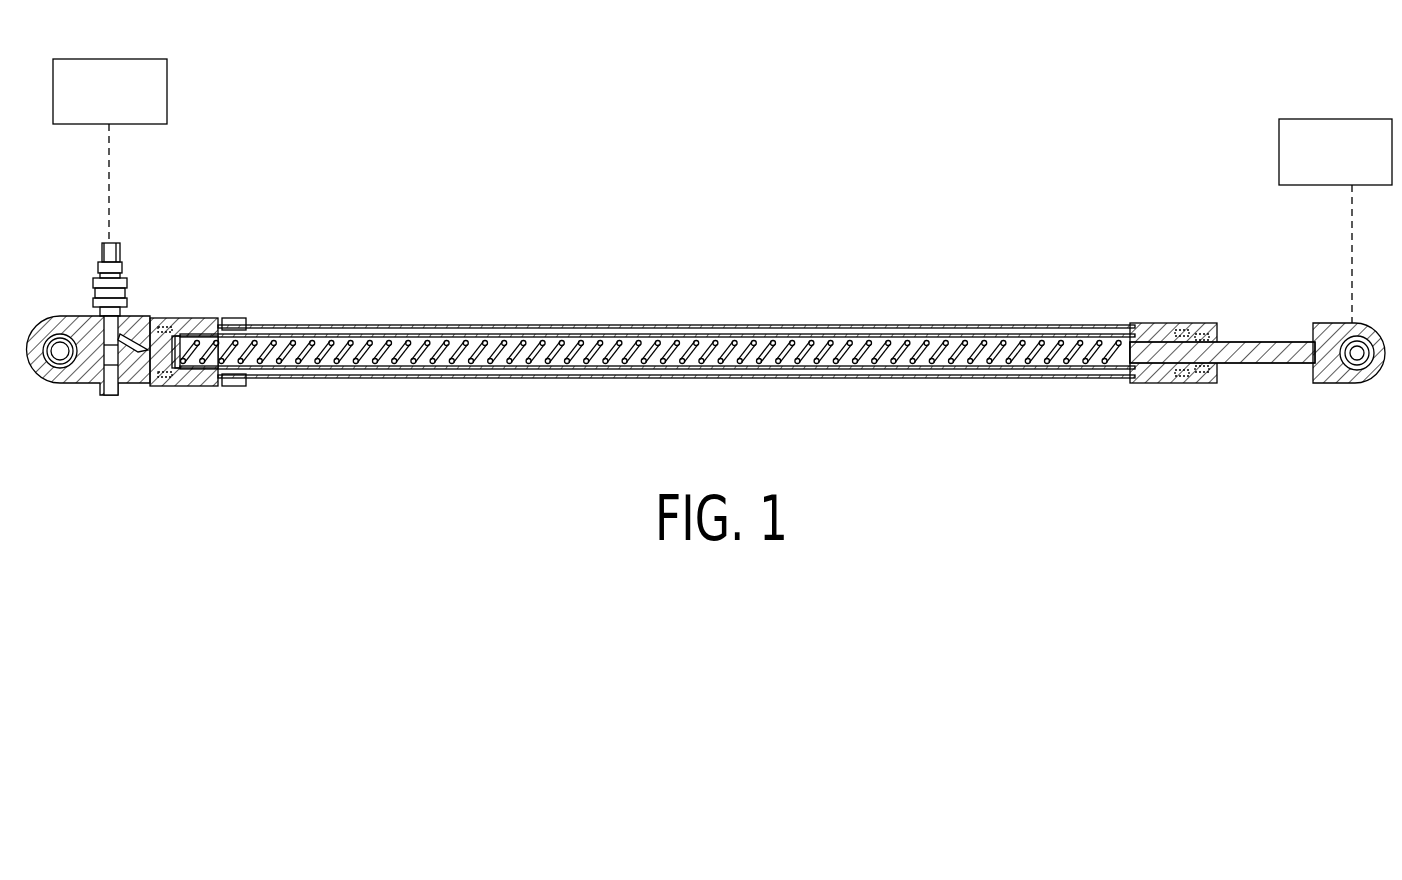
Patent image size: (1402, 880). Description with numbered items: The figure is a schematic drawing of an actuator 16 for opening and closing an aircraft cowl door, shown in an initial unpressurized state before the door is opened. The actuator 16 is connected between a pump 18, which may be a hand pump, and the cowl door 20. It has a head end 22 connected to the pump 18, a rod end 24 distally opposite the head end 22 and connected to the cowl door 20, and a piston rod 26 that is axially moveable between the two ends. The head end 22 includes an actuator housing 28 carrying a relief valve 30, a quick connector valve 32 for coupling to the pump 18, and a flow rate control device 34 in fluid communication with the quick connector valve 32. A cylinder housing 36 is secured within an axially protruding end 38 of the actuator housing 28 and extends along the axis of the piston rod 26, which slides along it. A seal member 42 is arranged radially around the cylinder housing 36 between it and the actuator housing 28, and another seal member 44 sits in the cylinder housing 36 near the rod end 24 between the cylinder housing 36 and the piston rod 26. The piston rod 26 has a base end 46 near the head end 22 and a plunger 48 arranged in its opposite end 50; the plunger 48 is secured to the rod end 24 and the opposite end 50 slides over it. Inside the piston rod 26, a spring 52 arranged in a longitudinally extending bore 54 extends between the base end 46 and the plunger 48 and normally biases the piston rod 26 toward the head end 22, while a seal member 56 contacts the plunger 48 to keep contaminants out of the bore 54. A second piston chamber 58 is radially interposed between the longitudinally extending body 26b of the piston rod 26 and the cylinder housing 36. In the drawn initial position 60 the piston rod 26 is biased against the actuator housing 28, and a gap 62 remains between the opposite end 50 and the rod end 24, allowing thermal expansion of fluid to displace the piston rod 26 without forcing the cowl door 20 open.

The actuator 16 is at (338, 224).
The pump 18 is at (167, 92).
The cowl door 20 is at (1279, 135).
The head end 22 is at (55, 298).
The rod end 24 is at (1370, 305).
The piston rod 26 is at (575, 338).
The longitudinally extending body 26b is at (1012, 335).
The actuator housing 28 is at (130, 385).
The relief valve 30 is at (108, 386).
The quick connector valve 32 is at (113, 245).
The flow rate control device 34 is at (122, 335).
The cylinder housing 36 is at (341, 326).
The axially protruding end 38 is at (182, 318).
The seal member 42 is at (168, 384).
The seal member 44 is at (1185, 385).
The base end 46 is at (163, 378).
The plunger 48 is at (1277, 333).
The opposite end 50 is at (1148, 330).
The spring 52 is at (706, 340).
The bore 54 is at (885, 343).
The seal member 56 is at (1173, 335).
The second piston chamber 58 is at (387, 333).
The initial position 60 is at (365, 398).
The gap 62 is at (1262, 370).